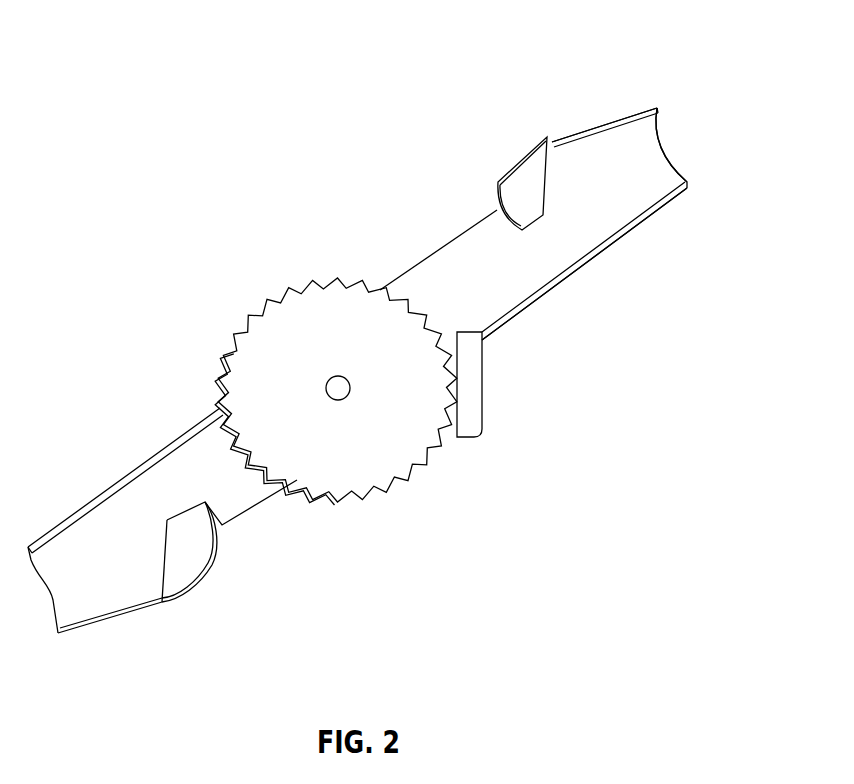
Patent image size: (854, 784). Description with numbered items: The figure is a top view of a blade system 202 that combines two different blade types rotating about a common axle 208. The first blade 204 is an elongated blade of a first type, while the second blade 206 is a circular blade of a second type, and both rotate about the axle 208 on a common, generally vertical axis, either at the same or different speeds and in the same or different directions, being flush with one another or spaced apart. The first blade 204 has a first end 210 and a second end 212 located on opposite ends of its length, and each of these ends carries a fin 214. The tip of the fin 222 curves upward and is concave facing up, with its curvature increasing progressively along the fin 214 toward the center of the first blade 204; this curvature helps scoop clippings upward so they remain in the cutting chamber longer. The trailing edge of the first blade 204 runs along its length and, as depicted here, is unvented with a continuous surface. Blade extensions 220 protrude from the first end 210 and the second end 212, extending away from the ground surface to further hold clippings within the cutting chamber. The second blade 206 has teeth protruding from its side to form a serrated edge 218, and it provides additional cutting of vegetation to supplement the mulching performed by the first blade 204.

The blade system 202 is at (115, 257).
The first blade 204 is at (465, 215).
The second blade 206 is at (350, 455).
The axle 208 is at (326, 387).
The first end 210 is at (120, 635).
The second end 212 is at (637, 244).
The fin 214 is at (607, 112).
The serrated edge 218 is at (447, 452).
The blade extension 220 is at (673, 152).
The tip of the fin 222 is at (522, 157).